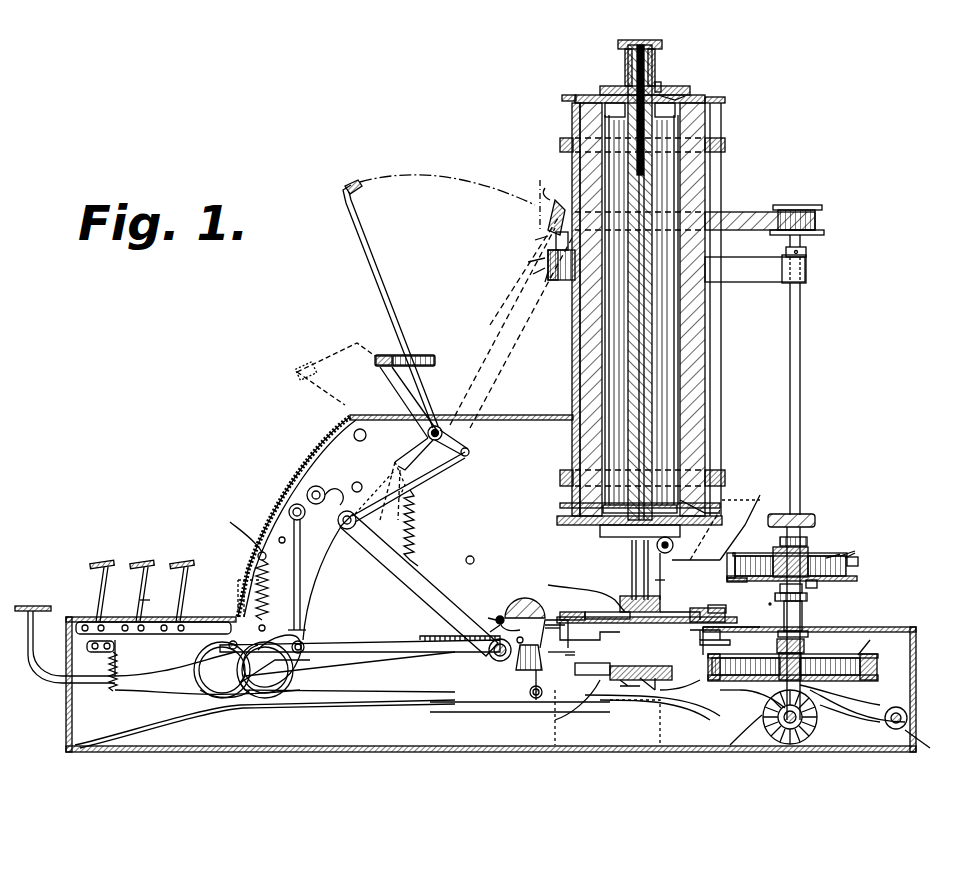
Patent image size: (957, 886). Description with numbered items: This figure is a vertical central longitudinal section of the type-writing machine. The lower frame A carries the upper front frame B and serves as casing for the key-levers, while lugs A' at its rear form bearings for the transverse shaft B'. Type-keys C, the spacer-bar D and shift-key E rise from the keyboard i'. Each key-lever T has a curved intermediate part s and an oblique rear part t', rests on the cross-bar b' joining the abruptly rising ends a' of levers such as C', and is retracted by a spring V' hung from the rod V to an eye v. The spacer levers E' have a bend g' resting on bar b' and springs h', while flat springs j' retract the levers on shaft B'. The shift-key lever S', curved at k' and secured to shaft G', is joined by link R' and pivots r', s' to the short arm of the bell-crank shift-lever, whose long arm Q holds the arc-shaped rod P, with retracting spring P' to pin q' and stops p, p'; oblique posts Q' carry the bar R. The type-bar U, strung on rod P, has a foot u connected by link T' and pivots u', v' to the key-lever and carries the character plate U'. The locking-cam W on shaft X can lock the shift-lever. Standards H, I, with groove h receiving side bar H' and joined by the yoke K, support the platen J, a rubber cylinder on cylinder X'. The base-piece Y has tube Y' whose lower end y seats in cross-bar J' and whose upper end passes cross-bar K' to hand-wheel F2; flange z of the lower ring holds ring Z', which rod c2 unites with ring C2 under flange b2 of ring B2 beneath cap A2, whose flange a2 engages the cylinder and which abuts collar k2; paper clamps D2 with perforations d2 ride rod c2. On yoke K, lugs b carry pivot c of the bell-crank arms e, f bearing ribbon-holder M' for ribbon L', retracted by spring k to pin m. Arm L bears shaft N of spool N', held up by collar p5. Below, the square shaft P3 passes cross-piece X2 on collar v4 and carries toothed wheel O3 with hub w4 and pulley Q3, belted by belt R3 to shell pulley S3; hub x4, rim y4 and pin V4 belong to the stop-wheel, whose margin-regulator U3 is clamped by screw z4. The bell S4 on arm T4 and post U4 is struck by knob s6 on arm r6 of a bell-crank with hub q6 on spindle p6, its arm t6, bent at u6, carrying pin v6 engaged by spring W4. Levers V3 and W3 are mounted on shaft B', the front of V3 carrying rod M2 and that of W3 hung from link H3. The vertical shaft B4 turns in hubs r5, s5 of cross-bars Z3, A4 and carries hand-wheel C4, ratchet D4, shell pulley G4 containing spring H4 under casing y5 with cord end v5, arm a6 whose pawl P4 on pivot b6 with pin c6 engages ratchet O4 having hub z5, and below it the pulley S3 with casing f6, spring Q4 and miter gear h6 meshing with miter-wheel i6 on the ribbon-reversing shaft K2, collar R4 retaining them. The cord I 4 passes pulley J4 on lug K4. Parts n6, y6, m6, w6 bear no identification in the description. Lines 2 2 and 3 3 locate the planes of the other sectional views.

The base frame A is at (504, 700).
The frame cover A' is at (923, 746).
The bearing B' is at (890, 731).
The standard B is at (401, 516).
The latch V is at (236, 531).
The latch arm V' is at (234, 580).
The spring R' is at (276, 590).
The pin v is at (268, 618).
The guide g' is at (224, 598).
The pin q' is at (378, 547).
The hand lever U is at (390, 306).
The handle U' is at (440, 177).
The rack bar R is at (395, 345).
The pivot r' is at (347, 480).
The link Q' is at (366, 390).
The pivot u is at (450, 432).
The pivot u' is at (464, 446).
The lever P is at (425, 457).
The pin p is at (339, 431).
The link p' is at (408, 487).
The arm T' is at (419, 585).
The arm t' is at (397, 546).
The pivot v' is at (349, 545).
The arm s is at (323, 584).
The pawl W is at (350, 475).
The pin X is at (339, 475).
The link Q is at (394, 481).
The spring P' is at (438, 528).
The rack bar S' is at (307, 648).
The pivot s' is at (312, 634).
The bar C' is at (347, 673).
The rack E' is at (276, 689).
The link T is at (275, 661).
The loop a' is at (265, 670).
The loop b' is at (222, 669).
The loop k' is at (225, 703).
The spring strip j' is at (265, 724).
The spring h' is at (126, 671).
The key bar E is at (135, 637).
The pedal D is at (45, 604).
The keys C is at (142, 577).
The pin i' is at (154, 602).
The dome S4 is at (520, 598).
The pin s6 is at (498, 609).
The pin r6 is at (483, 612).
The pin p6 is at (485, 628).
The pin q6 is at (522, 670).
The pivot G' is at (485, 666).
The block V3 is at (518, 690).
The bracket U4 is at (549, 658).
The pivot M2 is at (534, 700).
The block W4 is at (575, 612).
The bracket H' is at (590, 614).
The pin v6 is at (552, 621).
The pin t6 is at (560, 647).
The pin u6 is at (569, 648).
The arm X2 is at (586, 585).
The support H is at (583, 681).
The arm Q3 is at (577, 706).
The collar O3 is at (632, 685).
The block T4 is at (589, 680).
The arm R3 is at (885, 678).
The pin w4 is at (648, 691).
The arm H3 is at (681, 692).
The piston rod P3 is at (640, 357).
The arm W3 is at (653, 719).
The base flange Y is at (639, 533).
The collar J' is at (633, 540).
The shaft y is at (630, 556).
The collar h is at (626, 588).
The roller K4 is at (675, 545).
The rod w6 is at (669, 576).
The arm J4 is at (696, 563).
The pin v4 is at (665, 579).
The bracket x4 is at (680, 603).
The block V4 is at (700, 608).
The block y4 is at (716, 602).
The bracket z4 is at (720, 635).
The plate U3 is at (720, 649).
The plate A4 is at (734, 643).
The cylinder wall X' is at (659, 309).
The inner tube J is at (670, 314).
The tube Y' is at (700, 420).
The cap B2 is at (590, 90).
The cap ring A2 is at (620, 78).
The fitting F2 is at (662, 44).
The nut K' is at (675, 78).
The nut k2 is at (686, 89).
The port a2 is at (665, 112).
The flange b2 is at (575, 100).
The rod C2 is at (722, 103).
The clip D2 is at (712, 138).
The band d2 is at (725, 148).
The rod c2 is at (722, 172).
The plate z is at (710, 512).
The plate Z' is at (739, 526).
The lever I is at (718, 535).
The section line 4 is at (743, 521).
The arm n6 is at (778, 515).
The arm y6 is at (737, 695).
The bar L' is at (760, 206).
The pulley N' is at (801, 208).
The clip p5 is at (806, 250).
The bar L is at (755, 283).
The rod N is at (810, 399).
The gear C4 is at (818, 506).
The collar D4 is at (808, 540).
The gear housing H4 is at (770, 553).
The plate Z3 is at (852, 538).
The pin y5 is at (855, 548).
The pin r5 is at (833, 551).
The block v5 is at (858, 562).
The plate G4 is at (737, 589).
The collar z5 is at (778, 589).
The collar a6 is at (817, 586).
The shaft O4 is at (758, 606).
The gear P4 is at (808, 598).
The shaft B4 is at (802, 618).
The pin b6 is at (822, 612).
The collar c6 is at (808, 634).
The collar s5 is at (805, 647).
The arm f6 is at (870, 639).
The gear Q4 is at (840, 663).
The arm m6 is at (842, 694).
The arm S3 is at (857, 702).
The arm i6 is at (850, 725).
The bevel gear R4 is at (775, 740).
The shaft K2 is at (792, 745).
The arm h6 is at (746, 730).
The pawl M' is at (554, 205).
The block K is at (561, 281).
The pin c is at (566, 241).
The pin b is at (544, 295).
The pin e is at (535, 237).
The pin f is at (528, 257).
The pin k is at (532, 277).
The pin m is at (544, 286).
The section line 3 is at (533, 800).
The section line 2 is at (172, 500).